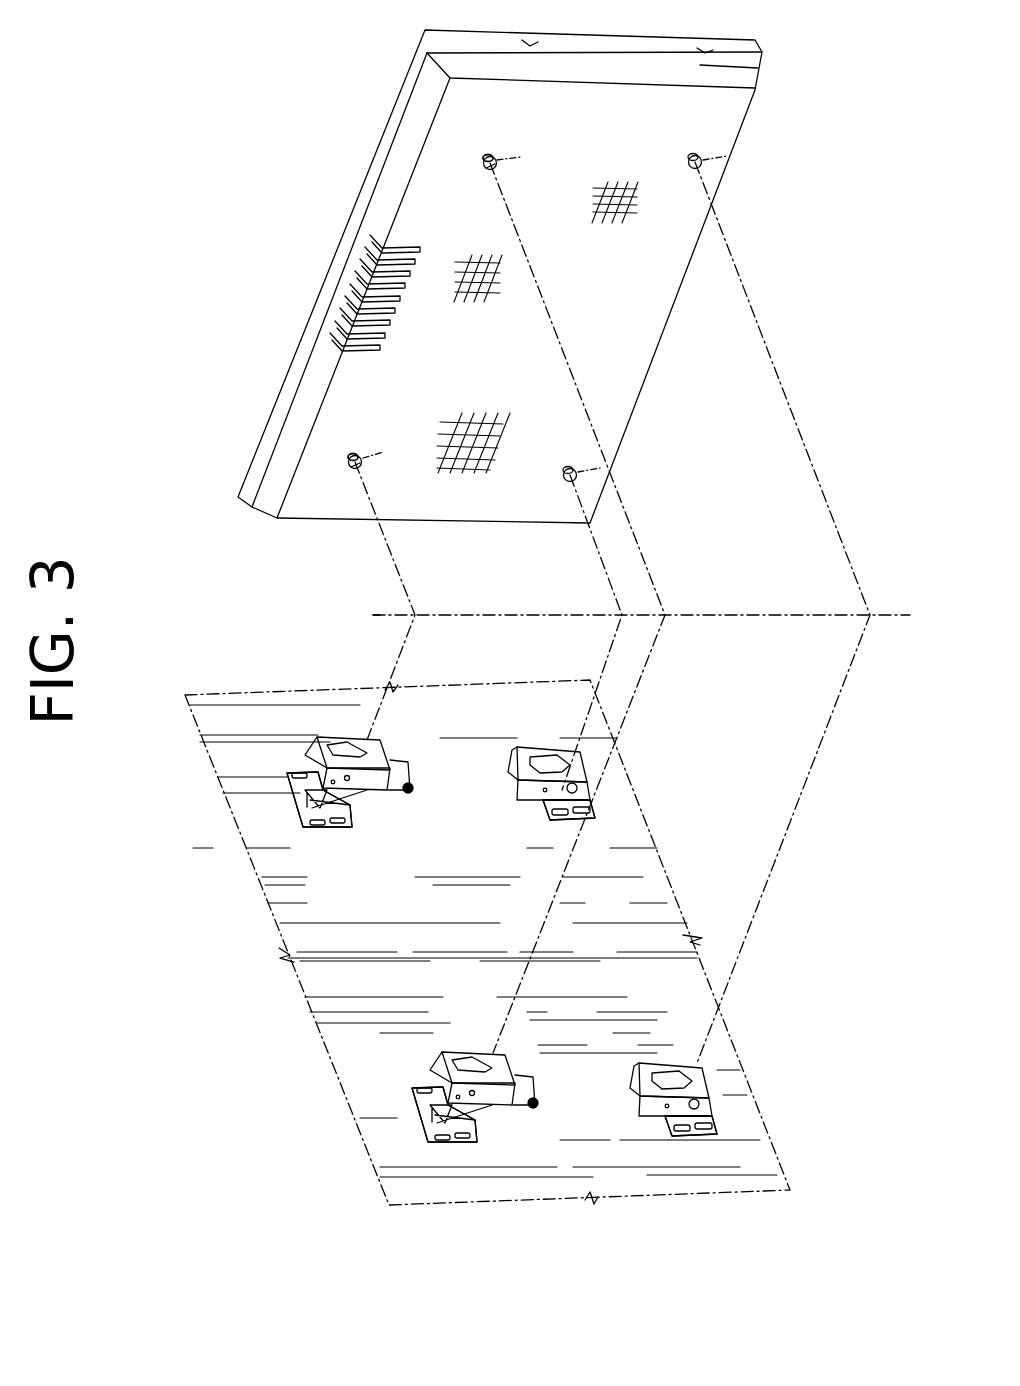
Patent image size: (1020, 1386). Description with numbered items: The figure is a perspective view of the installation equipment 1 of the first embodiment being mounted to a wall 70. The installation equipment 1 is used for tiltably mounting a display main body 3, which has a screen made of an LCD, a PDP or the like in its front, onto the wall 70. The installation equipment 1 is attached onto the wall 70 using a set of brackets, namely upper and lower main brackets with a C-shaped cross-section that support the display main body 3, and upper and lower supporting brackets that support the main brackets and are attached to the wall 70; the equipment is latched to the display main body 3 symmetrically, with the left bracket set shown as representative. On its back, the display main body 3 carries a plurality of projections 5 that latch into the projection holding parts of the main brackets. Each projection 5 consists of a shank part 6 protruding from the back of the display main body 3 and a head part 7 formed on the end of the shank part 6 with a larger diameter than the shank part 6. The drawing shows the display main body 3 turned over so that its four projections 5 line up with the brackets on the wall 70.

The installation equipment 1 is at (328, 1252).
The display main body 3 is at (323, 360).
The projection 5 is at (340, 136).
The shank part 6 is at (490, 155).
The head part 7 is at (485, 173).
The wall 70 is at (312, 983).